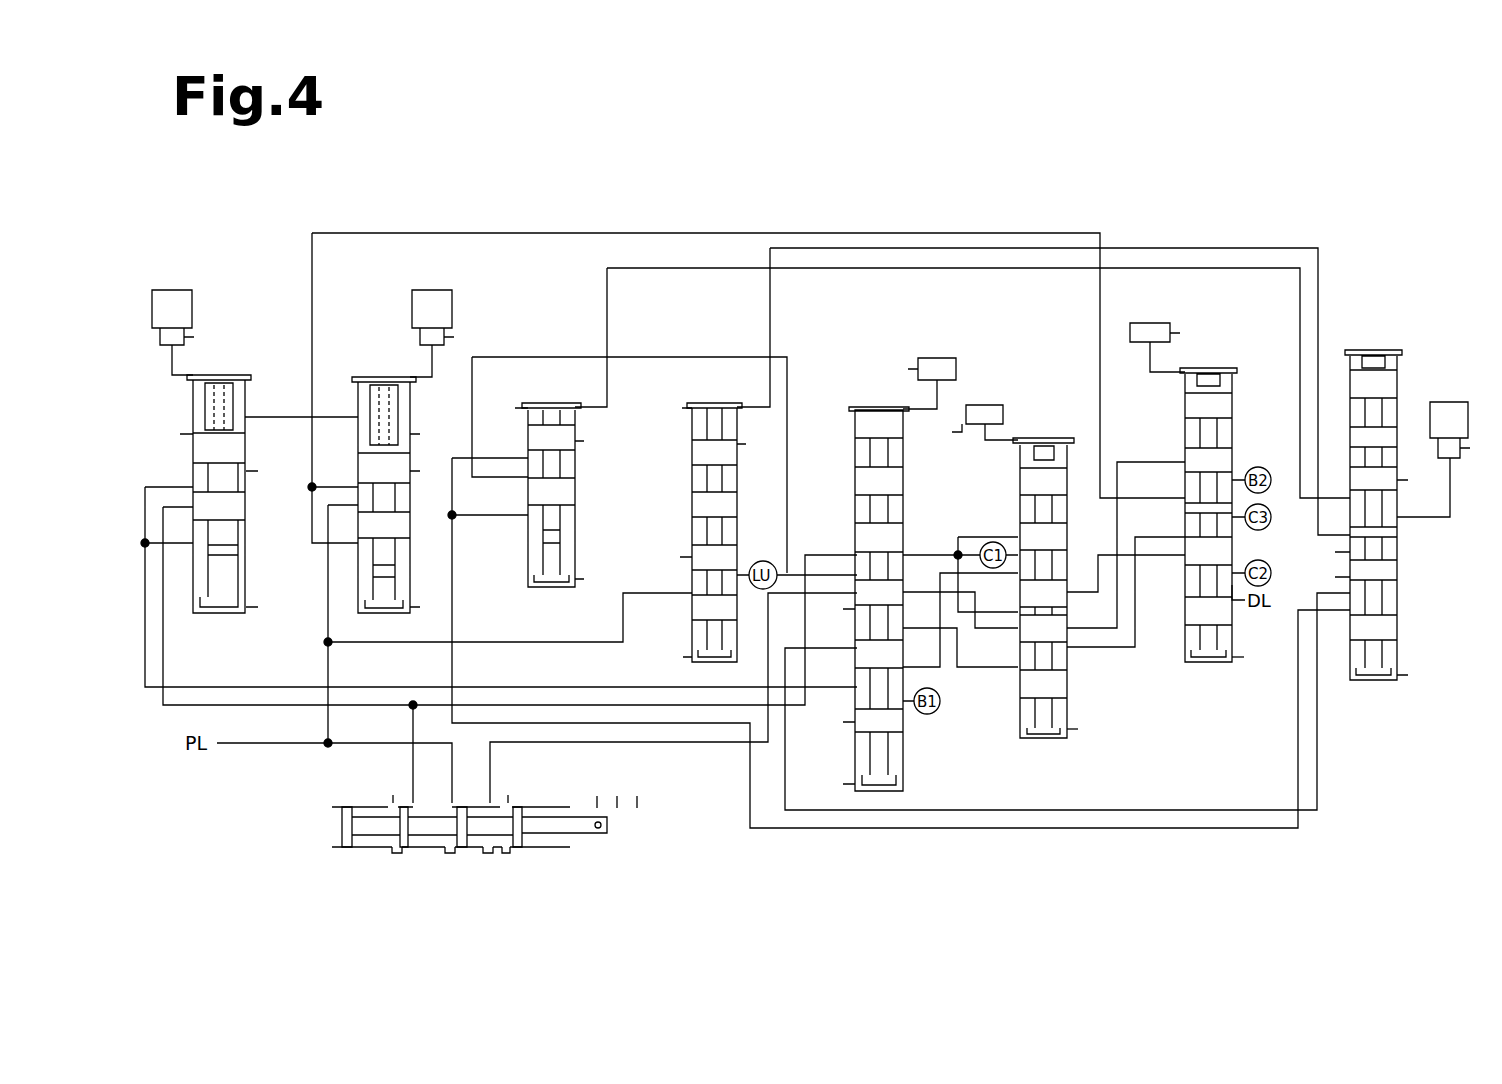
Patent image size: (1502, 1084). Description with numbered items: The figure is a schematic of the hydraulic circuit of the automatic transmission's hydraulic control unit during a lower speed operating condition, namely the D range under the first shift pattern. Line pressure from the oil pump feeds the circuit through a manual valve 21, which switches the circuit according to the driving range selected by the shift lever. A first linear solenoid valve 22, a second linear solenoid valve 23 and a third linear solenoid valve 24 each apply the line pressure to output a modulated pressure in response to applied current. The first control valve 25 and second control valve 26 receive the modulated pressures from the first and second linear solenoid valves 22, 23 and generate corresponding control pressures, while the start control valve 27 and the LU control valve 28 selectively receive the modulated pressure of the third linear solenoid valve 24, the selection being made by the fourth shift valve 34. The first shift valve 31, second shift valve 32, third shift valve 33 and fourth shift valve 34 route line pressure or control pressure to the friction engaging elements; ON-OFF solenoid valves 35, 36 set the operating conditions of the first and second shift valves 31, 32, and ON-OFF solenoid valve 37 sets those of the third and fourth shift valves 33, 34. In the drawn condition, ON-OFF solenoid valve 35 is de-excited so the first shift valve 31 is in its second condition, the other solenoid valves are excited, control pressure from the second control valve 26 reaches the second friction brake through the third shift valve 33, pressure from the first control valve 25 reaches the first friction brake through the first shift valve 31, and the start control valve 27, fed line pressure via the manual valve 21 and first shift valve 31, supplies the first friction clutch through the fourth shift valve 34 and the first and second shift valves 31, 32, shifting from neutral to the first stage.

The manual valve 21 is at (538, 803).
The first linear solenoid valve 22 is at (178, 290).
The second linear solenoid valve 23 is at (438, 290).
The third linear solenoid valve 24 is at (1454, 402).
The first control valve 25 is at (242, 375).
The second control valve 26 is at (380, 375).
The start control valve 27 is at (560, 401).
The LU control valve 28 is at (732, 403).
The first shift valve 31 is at (861, 407).
The second shift valve 32 is at (1060, 438).
The third shift valve 33 is at (1225, 368).
The fourth shift valve 34 is at (1382, 350).
The ON-OFF solenoid valve 35 is at (945, 358).
The ON-OFF solenoid valve 36 is at (992, 405).
The ON-OFF solenoid valve 37 is at (1139, 323).